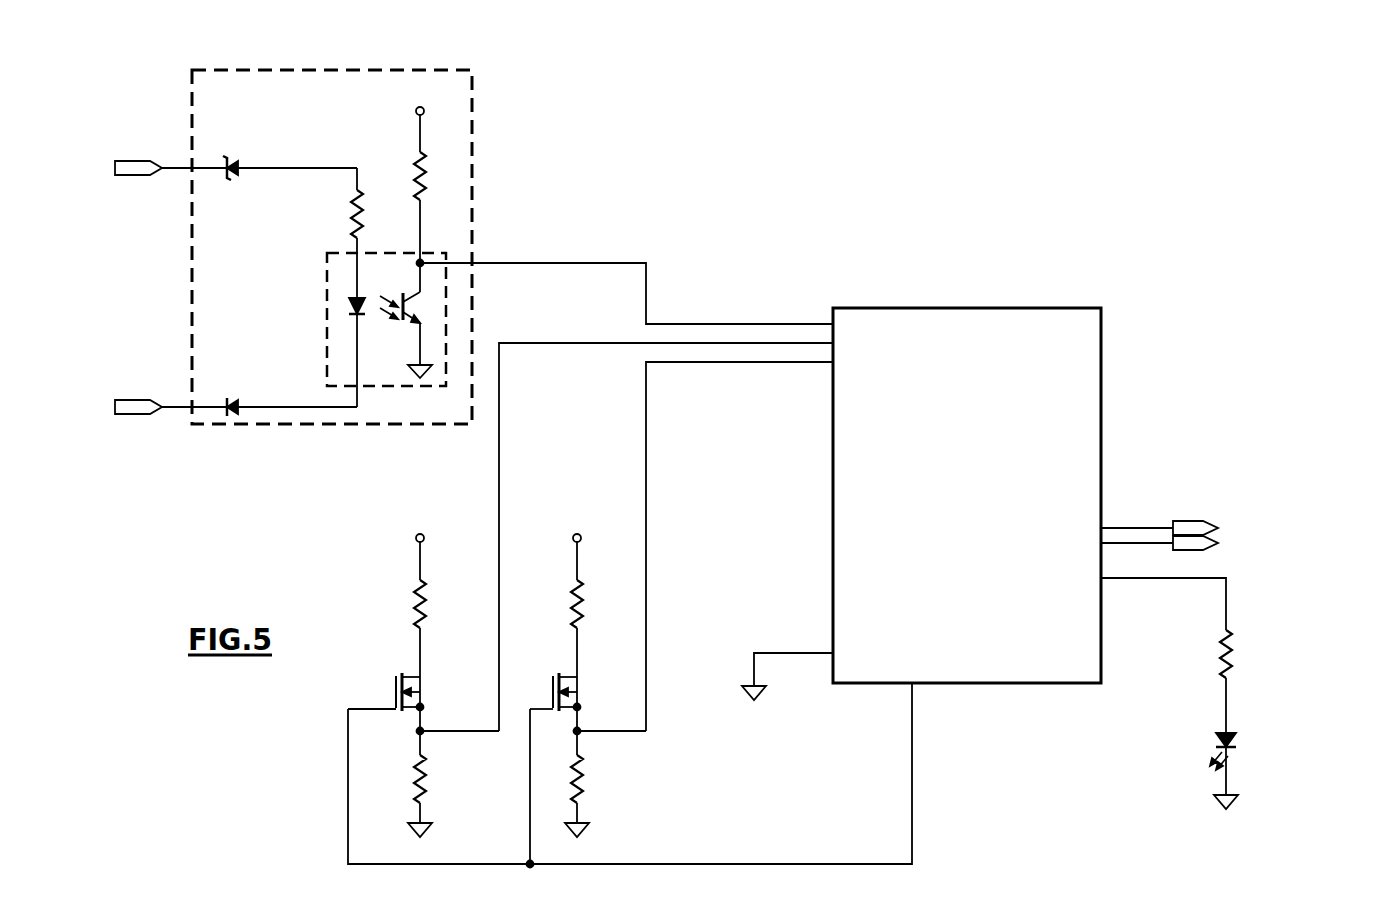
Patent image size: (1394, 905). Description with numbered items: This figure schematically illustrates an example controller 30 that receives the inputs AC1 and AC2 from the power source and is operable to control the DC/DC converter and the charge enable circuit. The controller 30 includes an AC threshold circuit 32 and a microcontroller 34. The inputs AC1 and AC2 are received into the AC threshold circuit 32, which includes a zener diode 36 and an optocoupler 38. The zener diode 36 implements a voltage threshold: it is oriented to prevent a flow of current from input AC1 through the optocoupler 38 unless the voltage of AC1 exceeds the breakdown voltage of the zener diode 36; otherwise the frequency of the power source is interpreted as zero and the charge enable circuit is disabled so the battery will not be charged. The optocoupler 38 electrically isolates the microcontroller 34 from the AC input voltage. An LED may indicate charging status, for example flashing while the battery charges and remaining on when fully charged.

The controller 30 is at (100, 82).
The AC threshold circuit 32 is at (277, 424).
The microcontroller 34 is at (998, 683).
The zener diode 36 is at (231, 179).
The optocoupler 38 is at (327, 318).